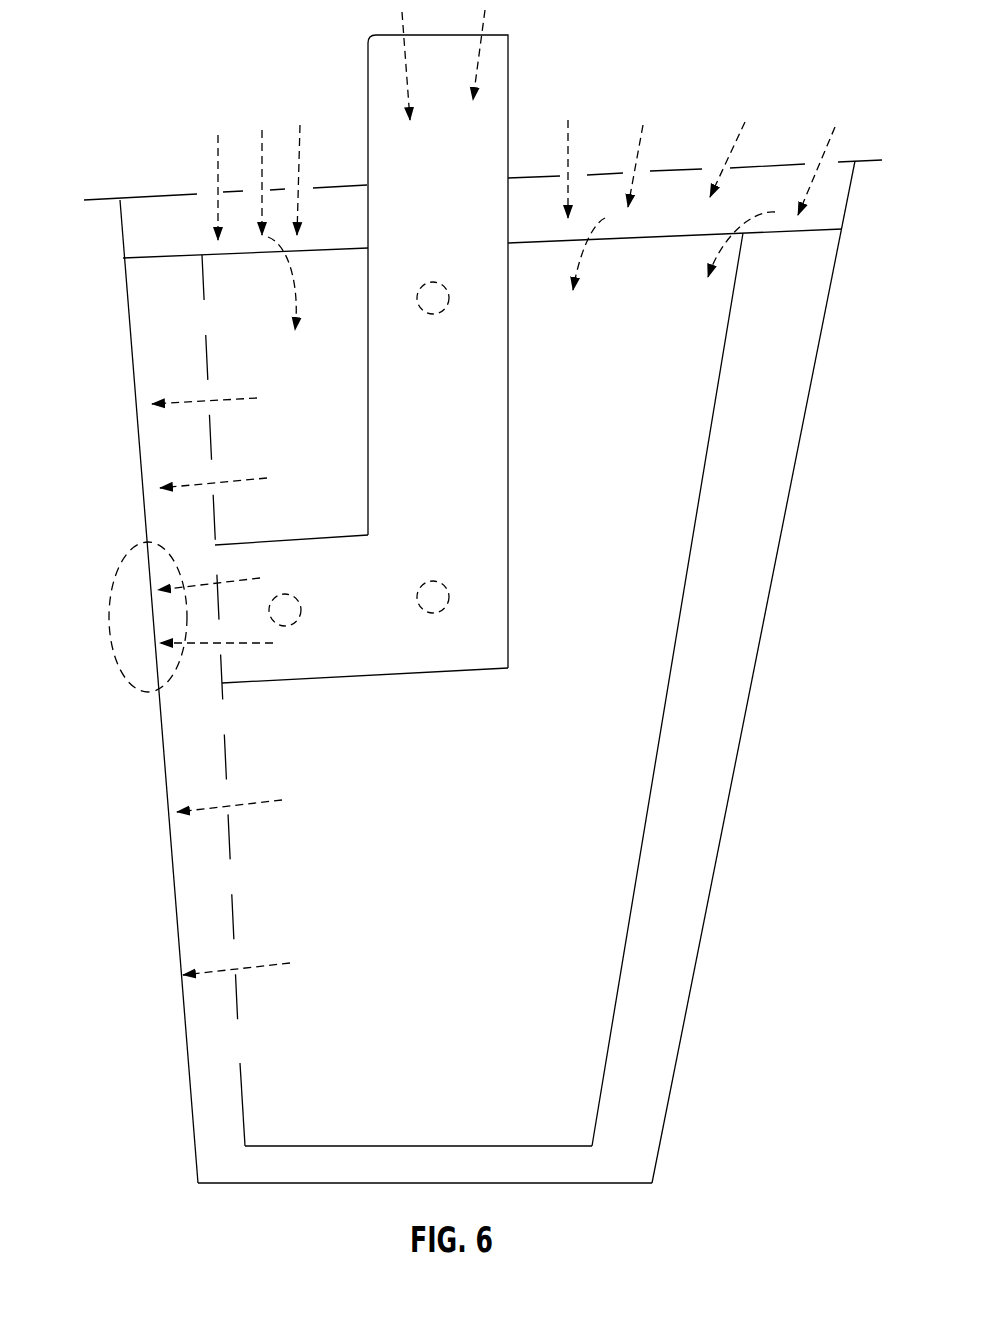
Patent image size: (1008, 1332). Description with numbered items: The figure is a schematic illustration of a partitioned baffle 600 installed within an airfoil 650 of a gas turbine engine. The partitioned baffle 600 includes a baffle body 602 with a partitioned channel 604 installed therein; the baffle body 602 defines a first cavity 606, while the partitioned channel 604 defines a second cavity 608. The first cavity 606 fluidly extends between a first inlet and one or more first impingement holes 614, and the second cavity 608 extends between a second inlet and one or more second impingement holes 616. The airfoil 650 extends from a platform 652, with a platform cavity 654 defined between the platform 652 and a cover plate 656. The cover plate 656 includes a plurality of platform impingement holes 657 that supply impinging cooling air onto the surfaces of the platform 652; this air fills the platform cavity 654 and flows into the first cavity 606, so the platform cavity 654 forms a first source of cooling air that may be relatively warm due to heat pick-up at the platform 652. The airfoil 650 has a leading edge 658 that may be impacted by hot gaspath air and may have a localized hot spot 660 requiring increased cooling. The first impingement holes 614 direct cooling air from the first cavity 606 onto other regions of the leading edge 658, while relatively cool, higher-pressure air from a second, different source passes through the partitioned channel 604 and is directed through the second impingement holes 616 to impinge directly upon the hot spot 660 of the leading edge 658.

The partitioned baffle 600 is at (733, 340).
The baffle body 602 is at (708, 452).
The partitioned channel 604 is at (508, 95).
The first cavity 606 is at (310, 448).
The second cavity 608 is at (464, 454).
The first impingement holes 614 is at (190, 318).
The second impingement holes 616 is at (232, 655).
The airfoil 650 is at (702, 925).
The platform 652 is at (810, 232).
The platform cavity 654 is at (365, 235).
The cover plate 656 is at (178, 193).
The platform impingement holes 657 is at (222, 170).
The leading edge 658 is at (140, 447).
The hot spot 660 is at (122, 560).